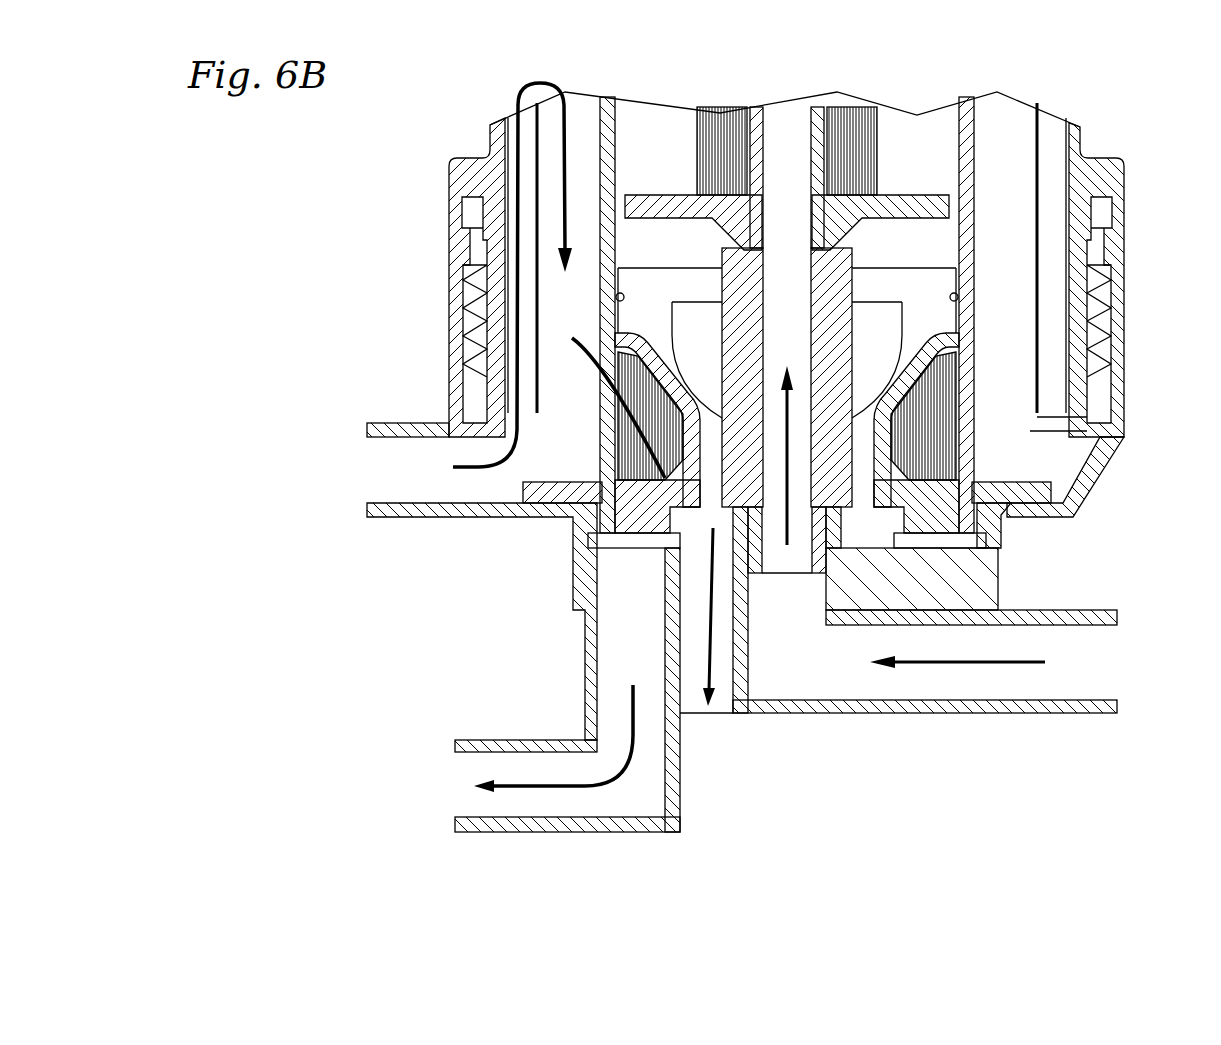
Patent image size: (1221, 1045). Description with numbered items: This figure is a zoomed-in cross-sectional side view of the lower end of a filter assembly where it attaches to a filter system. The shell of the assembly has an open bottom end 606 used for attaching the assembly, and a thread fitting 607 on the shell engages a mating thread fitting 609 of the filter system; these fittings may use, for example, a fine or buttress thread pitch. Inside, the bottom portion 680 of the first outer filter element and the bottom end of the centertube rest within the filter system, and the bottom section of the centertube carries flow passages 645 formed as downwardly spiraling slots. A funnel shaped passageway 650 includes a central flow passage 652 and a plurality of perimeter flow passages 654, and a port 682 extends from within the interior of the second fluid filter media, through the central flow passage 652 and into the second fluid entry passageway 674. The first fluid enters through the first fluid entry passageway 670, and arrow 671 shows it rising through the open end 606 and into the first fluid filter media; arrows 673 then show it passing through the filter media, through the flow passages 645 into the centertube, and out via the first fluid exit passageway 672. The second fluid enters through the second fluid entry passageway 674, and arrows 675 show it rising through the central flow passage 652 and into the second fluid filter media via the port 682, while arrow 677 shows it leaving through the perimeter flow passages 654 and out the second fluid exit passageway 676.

The open bottom end 606 is at (482, 447).
The thread fitting 607 is at (1093, 275).
The thread fitting 609 is at (1100, 325).
The flow passages 645 is at (647, 480).
The funnel shaped passageway 650 is at (612, 312).
The central flow passage 652 is at (781, 130).
The perimeter flow passages 654 is at (657, 303).
The first fluid entry passageway 670 is at (385, 483).
The arrow 671 is at (513, 100).
The first fluid exit passageway 672 is at (465, 797).
The arrows 673 is at (598, 398).
The second fluid entry passageway 674 is at (1098, 680).
The arrows 675 is at (790, 518).
The second fluid exit passageway 676 is at (700, 590).
The arrow 677 is at (705, 700).
The bottom portion 680 is at (556, 515).
The port 682 is at (830, 430).